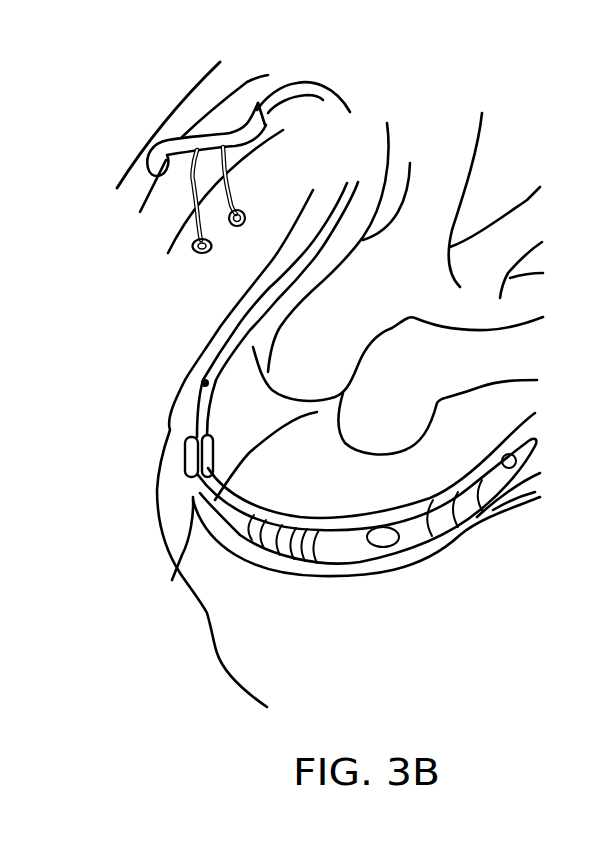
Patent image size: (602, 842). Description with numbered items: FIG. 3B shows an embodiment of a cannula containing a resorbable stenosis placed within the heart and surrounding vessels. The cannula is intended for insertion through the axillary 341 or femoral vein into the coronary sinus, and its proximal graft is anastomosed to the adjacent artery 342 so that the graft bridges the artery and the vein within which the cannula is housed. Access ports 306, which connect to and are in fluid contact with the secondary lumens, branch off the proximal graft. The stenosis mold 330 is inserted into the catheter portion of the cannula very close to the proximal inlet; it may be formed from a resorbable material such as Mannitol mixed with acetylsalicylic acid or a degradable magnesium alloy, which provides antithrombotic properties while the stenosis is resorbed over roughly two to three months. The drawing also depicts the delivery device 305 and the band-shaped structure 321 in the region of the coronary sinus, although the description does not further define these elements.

The artery 342 is at (204, 94).
The delivery catheter 305 is at (158, 153).
The axillary vein 341 is at (180, 196).
The access ports 306 is at (231, 228).
The stenosis mold 330 is at (188, 462).
The annuloplasty band 321 is at (236, 546).